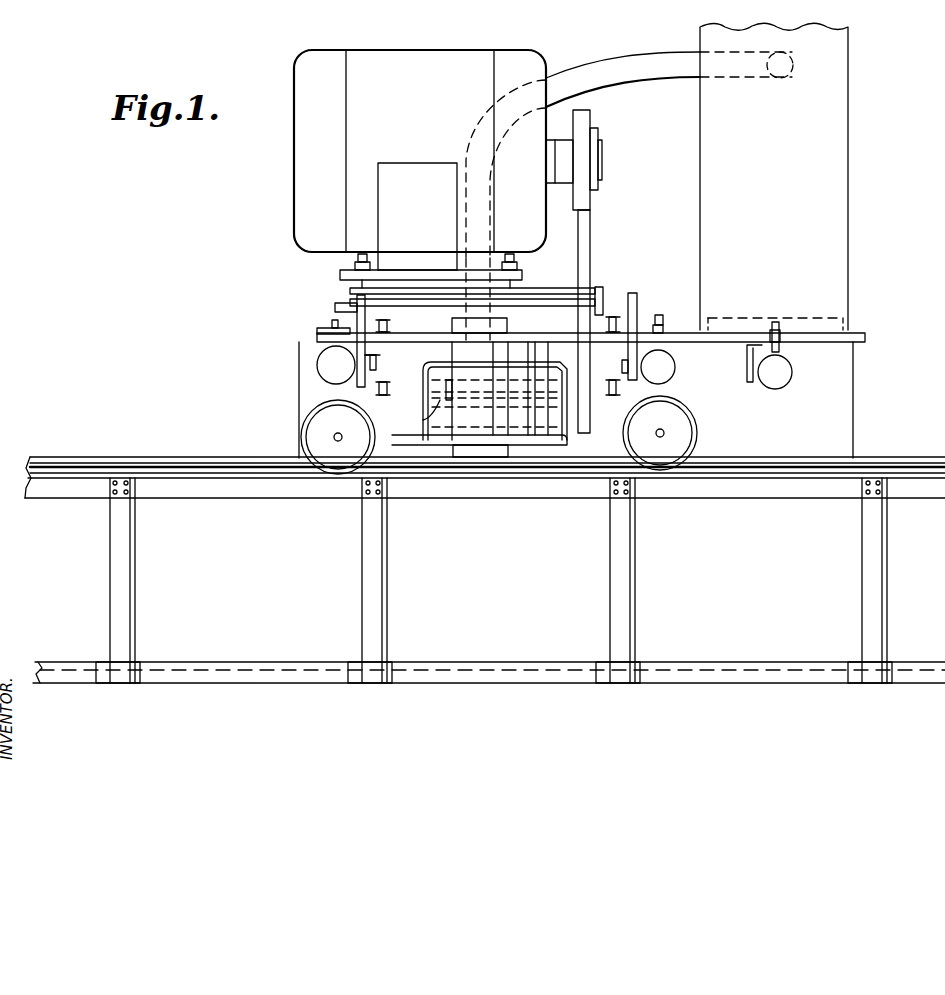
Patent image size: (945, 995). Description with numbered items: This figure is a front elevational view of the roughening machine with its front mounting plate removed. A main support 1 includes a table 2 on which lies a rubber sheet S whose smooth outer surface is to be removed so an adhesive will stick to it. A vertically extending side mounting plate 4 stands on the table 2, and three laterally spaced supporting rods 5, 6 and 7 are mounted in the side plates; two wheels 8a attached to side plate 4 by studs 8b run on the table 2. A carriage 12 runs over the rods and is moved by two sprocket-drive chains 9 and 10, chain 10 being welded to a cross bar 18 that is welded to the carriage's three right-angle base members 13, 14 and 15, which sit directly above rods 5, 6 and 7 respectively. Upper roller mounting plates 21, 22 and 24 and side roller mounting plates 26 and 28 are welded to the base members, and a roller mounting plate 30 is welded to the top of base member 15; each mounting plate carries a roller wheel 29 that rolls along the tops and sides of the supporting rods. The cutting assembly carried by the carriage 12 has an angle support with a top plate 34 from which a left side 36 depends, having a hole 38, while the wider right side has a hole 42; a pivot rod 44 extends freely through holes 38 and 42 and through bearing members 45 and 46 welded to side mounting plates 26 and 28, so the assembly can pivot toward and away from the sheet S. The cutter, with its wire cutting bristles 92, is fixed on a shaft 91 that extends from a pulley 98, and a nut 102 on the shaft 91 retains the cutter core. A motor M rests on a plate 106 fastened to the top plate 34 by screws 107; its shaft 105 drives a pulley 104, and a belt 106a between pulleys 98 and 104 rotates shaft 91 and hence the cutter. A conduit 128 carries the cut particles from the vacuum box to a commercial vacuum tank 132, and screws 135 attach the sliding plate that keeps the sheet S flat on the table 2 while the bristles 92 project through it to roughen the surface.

The main support 1 is at (122, 580).
The table 2 is at (210, 488).
The rubber sheet S is at (262, 462).
The side mounting plate 4 is at (299, 384).
The supporting rod 5 is at (336, 365).
The supporting rod 6 is at (675, 368).
The supporting rod 7 is at (792, 376).
The wheel 8a is at (320, 418).
The stud 8b is at (334, 437).
The sprocket-drive chain 9 is at (390, 326).
The sprocket-drive chain 10 is at (612, 316).
The carriage 12 is at (639, 286).
The base member 13 is at (384, 396).
The base member 14 is at (628, 392).
The base member 15 is at (790, 345).
The cross bar 18 is at (434, 334).
The upper roller mounting plate 21 is at (360, 386).
The upper roller mounting plate 22 is at (318, 330).
The upper roller mounting plate 24 is at (663, 328).
The side roller mounting plate 26 is at (378, 356).
The side roller mounting plate 28 is at (622, 364).
The roller wheel 29 is at (778, 322).
The roller mounting plate 30 is at (768, 330).
The top plate 34 is at (548, 290).
The left side 36 is at (357, 300).
The hole 38 is at (345, 308).
The hole 42 is at (600, 285).
The pivot rod 44 is at (548, 308).
The bearing member 45 is at (334, 322).
The bearing member 46 is at (634, 304).
The shaft 91 is at (486, 400).
The wire cutting bristles 92 is at (480, 460).
The pulley 98 is at (613, 451).
The nut 102 is at (442, 404).
The pulley 104 is at (592, 198).
The motor shaft 105 is at (600, 160).
The plate 106 is at (342, 276).
The belt 106a is at (588, 226).
The screw 107 is at (366, 258).
The conduit 128 is at (640, 55).
The vacuum tank 132 is at (774, 176).
The screw 135 is at (392, 440).
The motor M is at (420, 195).